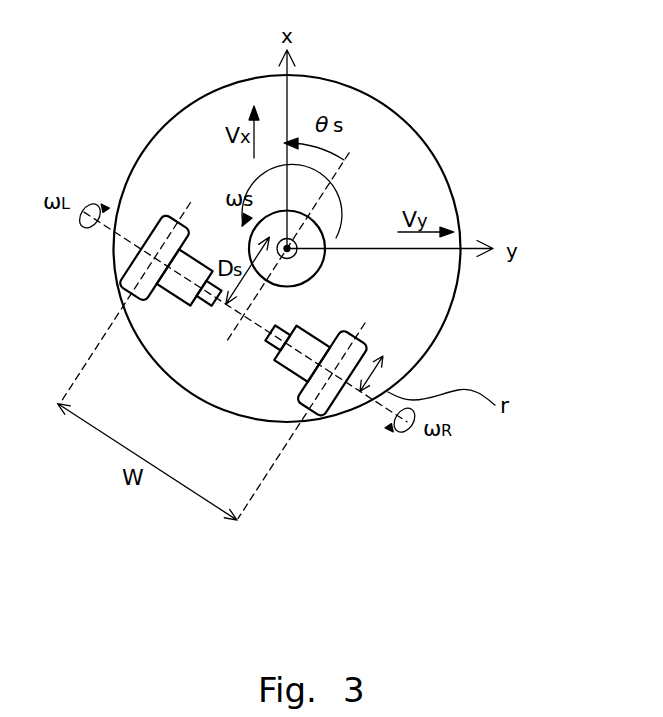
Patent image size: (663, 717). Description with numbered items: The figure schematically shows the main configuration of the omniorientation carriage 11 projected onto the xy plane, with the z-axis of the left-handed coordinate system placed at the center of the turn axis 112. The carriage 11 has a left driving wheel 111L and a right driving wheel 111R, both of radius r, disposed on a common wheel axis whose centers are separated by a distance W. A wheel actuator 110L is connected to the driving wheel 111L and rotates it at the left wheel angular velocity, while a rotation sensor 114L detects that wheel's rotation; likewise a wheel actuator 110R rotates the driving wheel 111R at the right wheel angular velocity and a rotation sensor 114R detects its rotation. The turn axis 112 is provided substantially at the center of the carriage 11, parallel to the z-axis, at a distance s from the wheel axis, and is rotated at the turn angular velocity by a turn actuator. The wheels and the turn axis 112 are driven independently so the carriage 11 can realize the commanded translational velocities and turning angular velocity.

The carriage 11 is at (167, 122).
The driving wheel 111L is at (127, 271).
The wheel actuator 110L is at (121, 302).
The rotation sensor 114L is at (185, 312).
The driving wheel 111R is at (333, 416).
The wheel actuator 110R is at (268, 425).
The rotation sensor 114R is at (268, 350).
The turn axis 112 is at (297, 253).